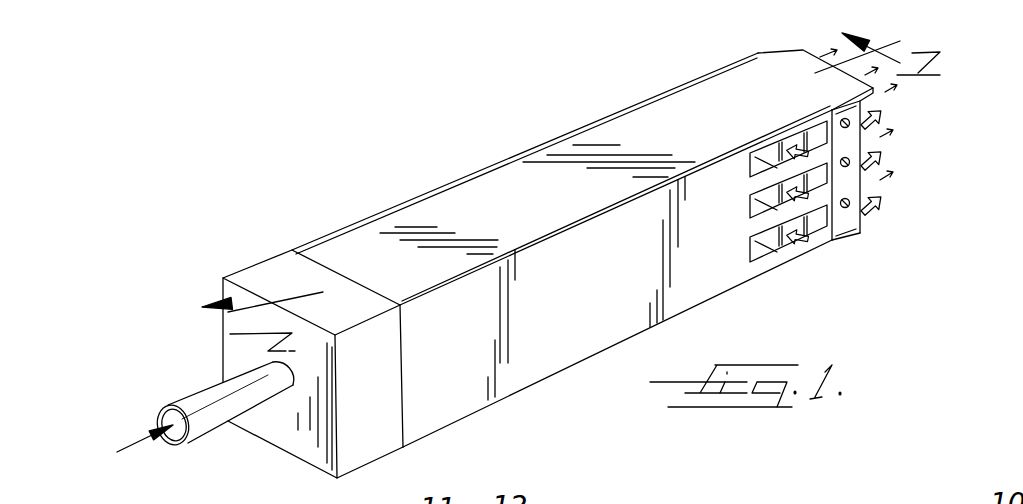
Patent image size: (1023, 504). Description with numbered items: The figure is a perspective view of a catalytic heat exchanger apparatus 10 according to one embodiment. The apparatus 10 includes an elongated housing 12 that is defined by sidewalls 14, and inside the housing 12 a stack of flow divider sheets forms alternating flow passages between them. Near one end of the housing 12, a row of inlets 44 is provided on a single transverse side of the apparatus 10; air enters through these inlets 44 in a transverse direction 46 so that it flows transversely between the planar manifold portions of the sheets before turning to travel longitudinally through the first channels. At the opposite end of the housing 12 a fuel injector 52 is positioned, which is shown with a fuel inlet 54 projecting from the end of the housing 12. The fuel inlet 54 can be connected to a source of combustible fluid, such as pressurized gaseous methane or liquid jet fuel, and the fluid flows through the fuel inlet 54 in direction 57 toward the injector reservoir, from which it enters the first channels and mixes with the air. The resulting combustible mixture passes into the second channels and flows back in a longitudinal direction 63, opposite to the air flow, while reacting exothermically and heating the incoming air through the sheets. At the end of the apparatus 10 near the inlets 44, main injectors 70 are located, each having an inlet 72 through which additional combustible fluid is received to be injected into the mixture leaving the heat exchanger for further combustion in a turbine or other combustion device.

The apparatus 10 is at (455, 132).
The housing 12 is at (388, 222).
The sidewalls 14 is at (592, 143).
The inlets 44 is at (787, 145).
The transverse direction 46 is at (798, 253).
The fuel injector 52 is at (287, 424).
The fuel inlet 54 is at (197, 395).
The direction 57 is at (138, 443).
The longitudinal direction 63 is at (892, 207).
The main injectors 70 is at (882, 113).
The inlet 72 is at (878, 152).